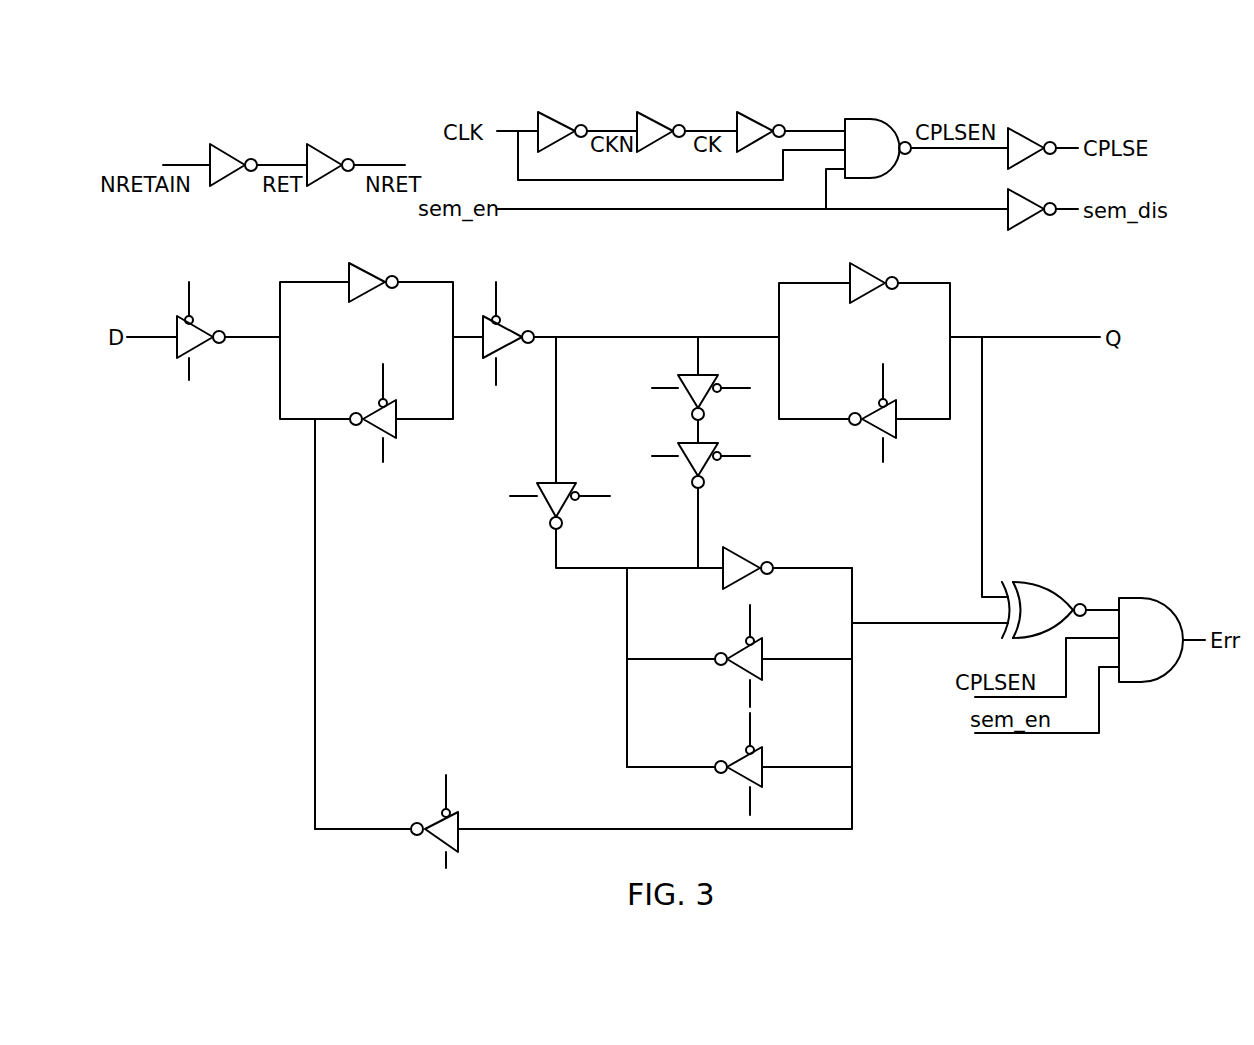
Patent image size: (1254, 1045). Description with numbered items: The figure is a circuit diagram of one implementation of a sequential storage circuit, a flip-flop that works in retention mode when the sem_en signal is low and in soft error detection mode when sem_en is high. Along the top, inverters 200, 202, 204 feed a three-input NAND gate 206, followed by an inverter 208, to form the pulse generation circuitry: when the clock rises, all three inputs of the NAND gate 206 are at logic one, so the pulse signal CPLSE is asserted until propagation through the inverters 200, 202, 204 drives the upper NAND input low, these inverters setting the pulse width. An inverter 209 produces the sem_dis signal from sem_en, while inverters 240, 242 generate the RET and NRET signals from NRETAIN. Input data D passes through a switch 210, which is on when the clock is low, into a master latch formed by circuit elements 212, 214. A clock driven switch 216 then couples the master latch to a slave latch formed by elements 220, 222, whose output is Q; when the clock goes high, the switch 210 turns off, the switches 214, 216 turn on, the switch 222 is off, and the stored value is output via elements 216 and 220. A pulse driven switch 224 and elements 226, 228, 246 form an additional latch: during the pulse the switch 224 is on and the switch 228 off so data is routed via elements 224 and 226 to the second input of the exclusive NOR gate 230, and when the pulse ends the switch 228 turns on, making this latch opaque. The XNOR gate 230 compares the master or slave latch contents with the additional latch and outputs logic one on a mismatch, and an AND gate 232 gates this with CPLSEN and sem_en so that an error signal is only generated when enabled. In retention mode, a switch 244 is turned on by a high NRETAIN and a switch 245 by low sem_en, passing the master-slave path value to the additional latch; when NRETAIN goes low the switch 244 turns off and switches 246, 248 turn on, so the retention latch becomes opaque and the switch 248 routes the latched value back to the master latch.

The inverter 200 is at (575, 102).
The inverter 202 is at (673, 102).
The inverter 204 is at (773, 102).
The NAND gate 206 is at (888, 102).
The inverter 208 is at (1043, 117).
The inverter 209 is at (1028, 231).
The switch 210 is at (201, 348).
The circuit element of master latch 212 is at (385, 252).
The switch 214 is at (378, 432).
The clock driven switch 216 is at (513, 327).
The circuit element of slave latch 220 is at (885, 257).
The switch 222 is at (868, 409).
The pulse driven switch 224 is at (549, 515).
The circuit element of additional latch 226 is at (745, 553).
The switch 228 is at (769, 652).
The exclusive NOR gate 230 is at (1055, 562).
The AND gate 232 is at (1167, 580).
The inverter 240 is at (244, 134).
The inverter 242 is at (343, 134).
The switch 244 is at (683, 399).
The switch 245 is at (711, 471).
The switch 246 is at (769, 760).
The switch 248 is at (462, 824).